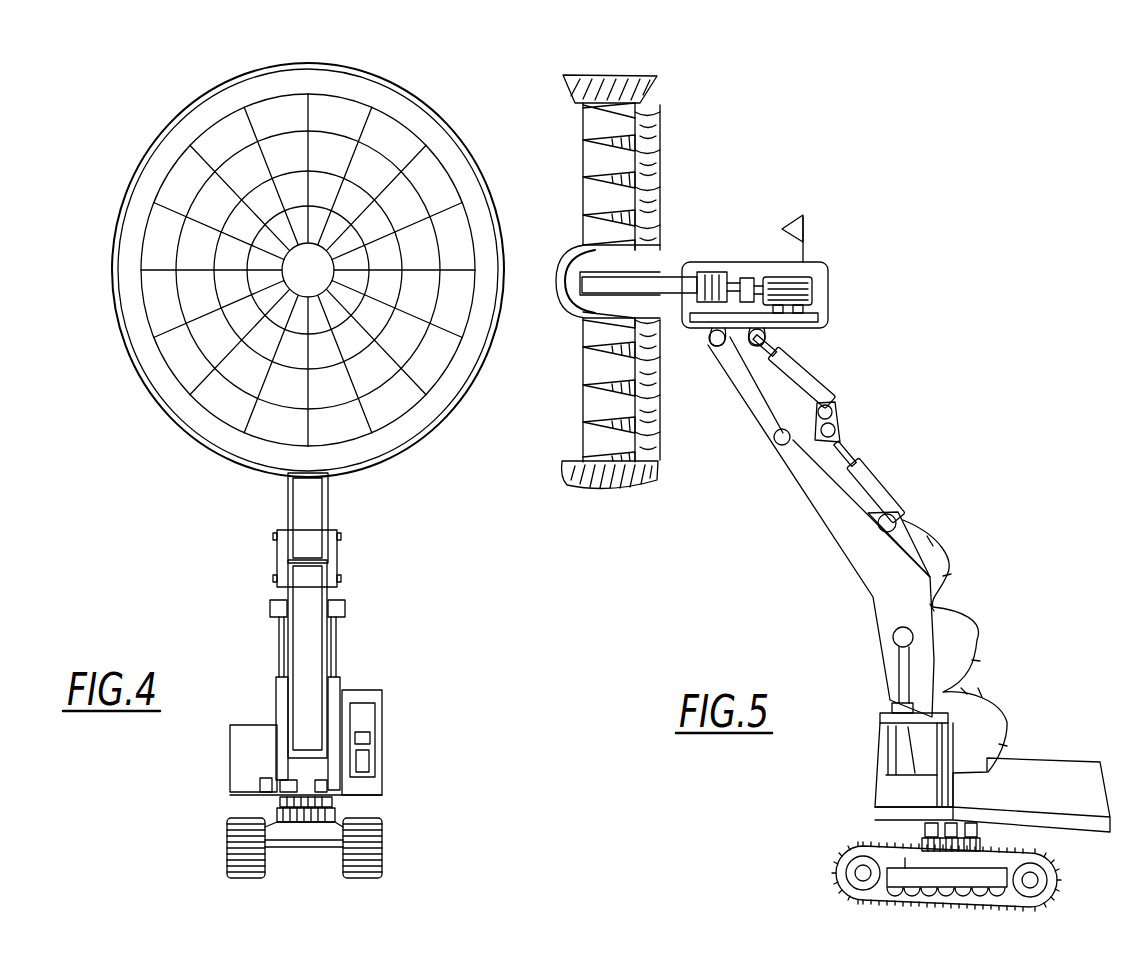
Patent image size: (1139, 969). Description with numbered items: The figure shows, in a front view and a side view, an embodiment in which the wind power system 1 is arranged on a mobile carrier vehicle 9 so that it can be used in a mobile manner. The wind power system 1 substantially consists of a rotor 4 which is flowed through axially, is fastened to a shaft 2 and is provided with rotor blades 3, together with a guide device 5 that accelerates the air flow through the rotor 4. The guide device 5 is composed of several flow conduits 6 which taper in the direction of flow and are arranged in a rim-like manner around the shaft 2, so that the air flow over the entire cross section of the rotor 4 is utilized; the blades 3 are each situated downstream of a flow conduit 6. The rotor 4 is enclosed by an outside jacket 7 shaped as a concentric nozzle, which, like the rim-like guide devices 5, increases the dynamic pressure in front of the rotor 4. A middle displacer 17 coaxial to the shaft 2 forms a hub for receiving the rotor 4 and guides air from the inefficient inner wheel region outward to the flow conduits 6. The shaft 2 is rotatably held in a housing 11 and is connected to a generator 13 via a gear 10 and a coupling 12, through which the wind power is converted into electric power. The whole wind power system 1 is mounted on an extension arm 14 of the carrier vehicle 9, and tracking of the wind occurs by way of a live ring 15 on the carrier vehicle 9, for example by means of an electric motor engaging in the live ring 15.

In FIG. 4, the wind power system 1 is at (340, 341).
In FIG. 5, the wind power system 1 is at (560, 347).
In FIG. 5, the shaft 2 is at (670, 285).
In FIG. 5, the rotor blades 3 is at (652, 443).
In FIG. 5, the rotor 4 is at (643, 193).
In FIG. 5, the guide device 5 is at (607, 175).
In FIG. 5, the flow conduits 6 is at (600, 400).
In FIG. 5, the outside jacket 7 is at (615, 473).
In FIG. 4, the carrier vehicle 9 is at (382, 780).
In FIG. 5, the carrier vehicle 9 is at (900, 795).
In FIG. 5, the gear 10 is at (710, 280).
In FIG. 5, the housing 11 is at (828, 293).
In FIG. 5, the coupling 12 is at (752, 283).
In FIG. 5, the generator 13 is at (803, 285).
In FIG. 5, the extension arm 14 is at (843, 518).
In FIG. 5, the live ring 15 is at (925, 838).
In FIG. 5, the middle displacer 17 is at (573, 300).